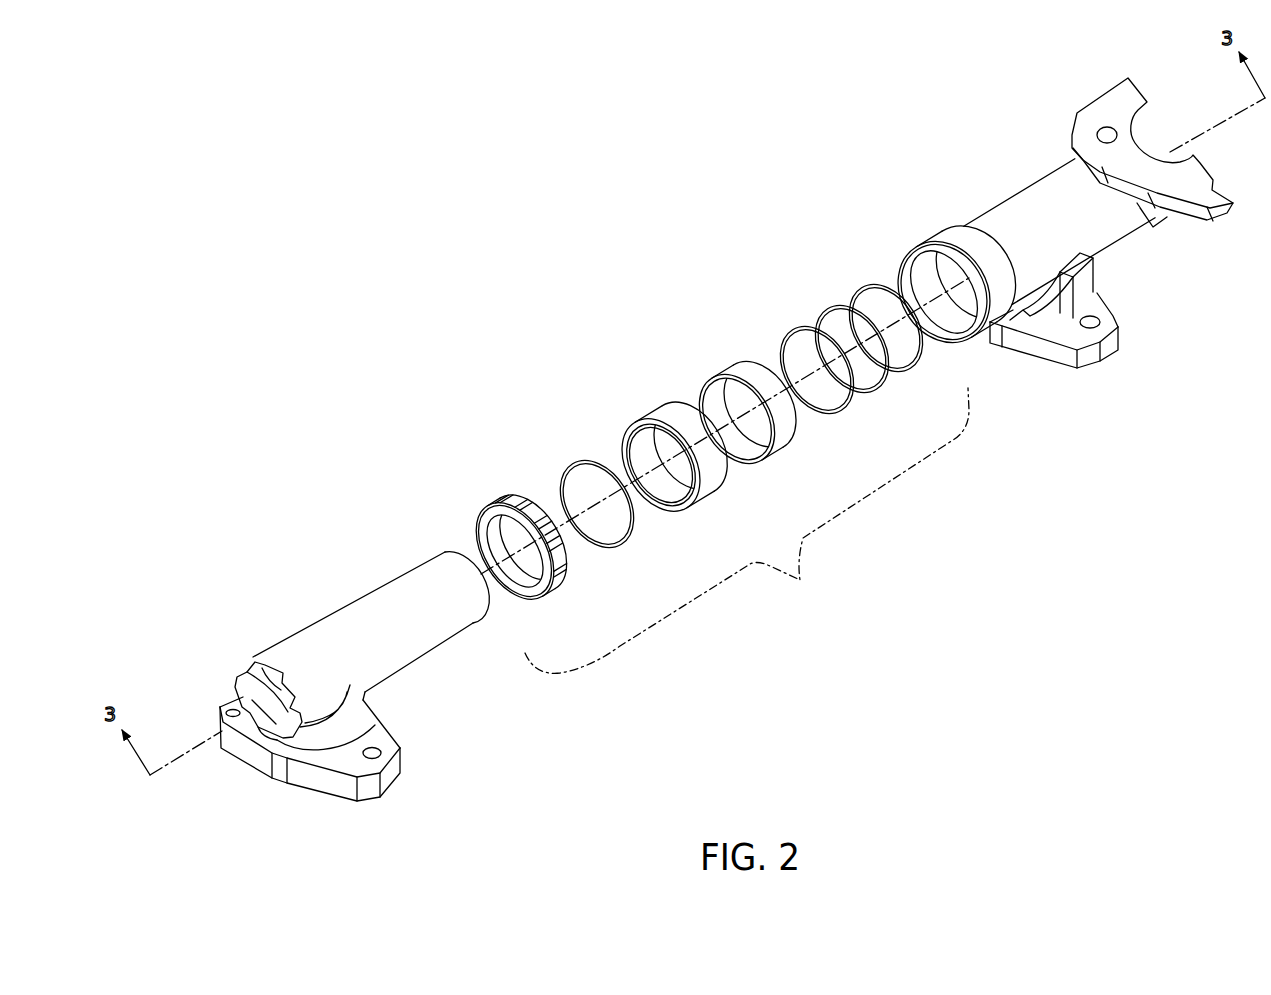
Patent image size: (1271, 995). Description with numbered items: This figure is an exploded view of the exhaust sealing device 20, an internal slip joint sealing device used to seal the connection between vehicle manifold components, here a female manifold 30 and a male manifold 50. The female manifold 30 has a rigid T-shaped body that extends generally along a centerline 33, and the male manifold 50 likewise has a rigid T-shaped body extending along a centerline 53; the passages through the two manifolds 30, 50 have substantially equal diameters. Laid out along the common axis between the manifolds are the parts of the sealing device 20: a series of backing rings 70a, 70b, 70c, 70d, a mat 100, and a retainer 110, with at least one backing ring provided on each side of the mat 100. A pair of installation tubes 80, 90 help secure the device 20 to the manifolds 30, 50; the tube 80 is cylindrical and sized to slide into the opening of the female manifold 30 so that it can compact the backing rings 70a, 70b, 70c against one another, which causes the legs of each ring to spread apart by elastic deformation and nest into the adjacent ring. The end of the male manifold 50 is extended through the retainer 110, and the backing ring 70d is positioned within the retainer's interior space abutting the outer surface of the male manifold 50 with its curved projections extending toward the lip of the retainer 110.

The exhaust sealing device 20 is at (747, 530).
The female manifold 30 is at (1016, 176).
The centerline 33 is at (175, 757).
The male manifold 50 is at (350, 590).
The centerline 53 is at (1217, 127).
The backing ring 70a is at (873, 285).
The backing ring 70b is at (838, 306).
The backing ring 70c is at (803, 327).
The backing ring 70d is at (582, 461).
The installation tube 80 is at (725, 372).
The installation tube 90 is at (676, 471).
The mat 100 is at (672, 507).
The retainer 110 is at (493, 493).